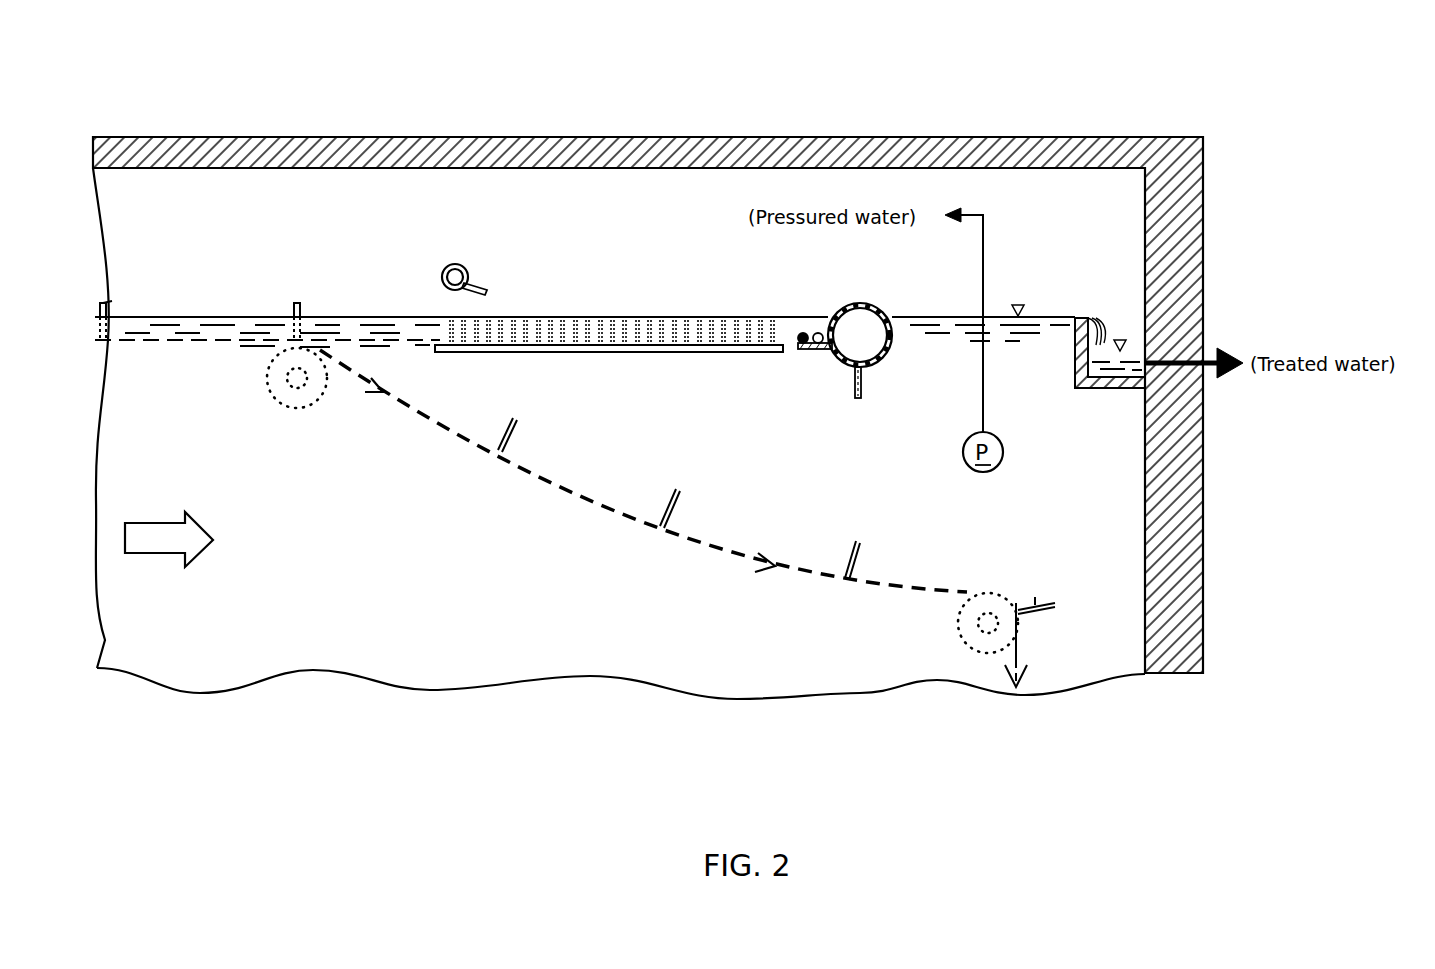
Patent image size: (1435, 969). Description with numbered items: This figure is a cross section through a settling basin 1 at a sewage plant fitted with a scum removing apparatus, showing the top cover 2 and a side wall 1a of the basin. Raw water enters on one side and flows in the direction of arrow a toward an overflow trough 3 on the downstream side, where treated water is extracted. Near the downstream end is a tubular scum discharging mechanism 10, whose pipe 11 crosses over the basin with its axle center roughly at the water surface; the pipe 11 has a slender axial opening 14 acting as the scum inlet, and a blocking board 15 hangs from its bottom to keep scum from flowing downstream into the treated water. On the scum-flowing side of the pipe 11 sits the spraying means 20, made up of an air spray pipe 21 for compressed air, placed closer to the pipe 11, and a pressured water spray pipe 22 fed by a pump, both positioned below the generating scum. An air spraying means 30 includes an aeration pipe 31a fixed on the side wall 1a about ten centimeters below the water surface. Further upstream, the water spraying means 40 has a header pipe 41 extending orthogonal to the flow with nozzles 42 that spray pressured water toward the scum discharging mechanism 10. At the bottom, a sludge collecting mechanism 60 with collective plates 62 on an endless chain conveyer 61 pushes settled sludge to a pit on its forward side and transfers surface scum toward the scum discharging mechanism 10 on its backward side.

The settling basin 1 is at (440, 130).
The side wall 1a is at (268, 186).
The top cover 2 is at (678, 138).
The overflow trough 3 is at (1118, 330).
The tubular scum discharging mechanism 10 is at (890, 305).
The pipe 11 is at (890, 343).
The opening 14 is at (857, 307).
The blocking board 15 is at (865, 385).
The spraying means 20 is at (815, 356).
The air spray pipe 21 is at (822, 334).
The pressured water spray pipe 22 is at (800, 345).
The air spraying means 30 is at (575, 360).
The aeration pipe 31a is at (670, 355).
The water spraying means 40 is at (462, 252).
The header pipe 41 is at (448, 266).
The nozzle 42 is at (485, 288).
The sludge collecting mechanism 60 is at (465, 450).
The endless chain conveyer 61 is at (553, 480).
The collective plate 62 is at (297, 303).
The arrow a is at (155, 537).